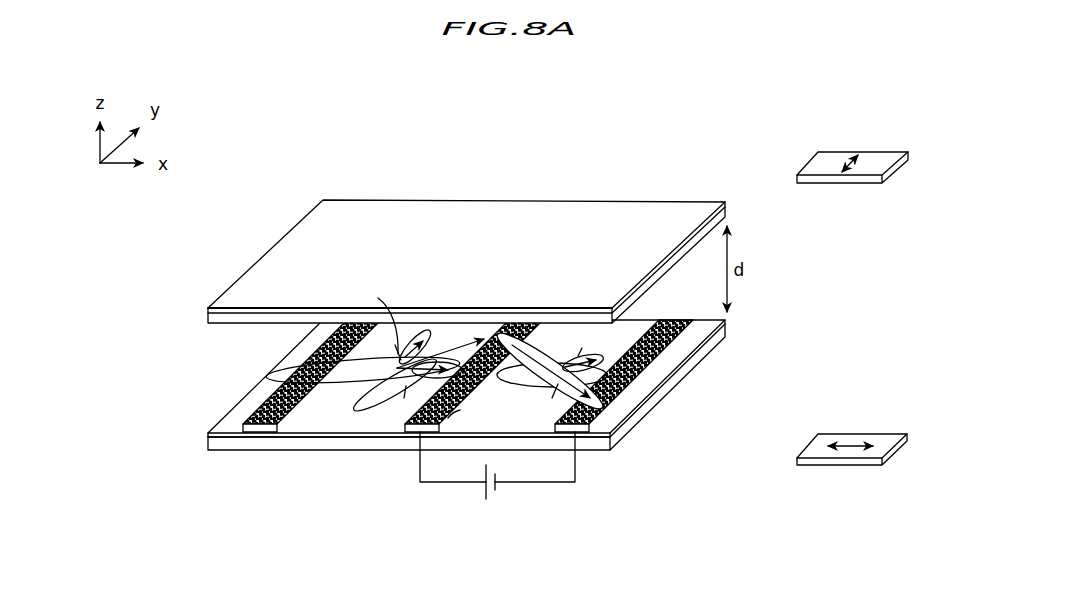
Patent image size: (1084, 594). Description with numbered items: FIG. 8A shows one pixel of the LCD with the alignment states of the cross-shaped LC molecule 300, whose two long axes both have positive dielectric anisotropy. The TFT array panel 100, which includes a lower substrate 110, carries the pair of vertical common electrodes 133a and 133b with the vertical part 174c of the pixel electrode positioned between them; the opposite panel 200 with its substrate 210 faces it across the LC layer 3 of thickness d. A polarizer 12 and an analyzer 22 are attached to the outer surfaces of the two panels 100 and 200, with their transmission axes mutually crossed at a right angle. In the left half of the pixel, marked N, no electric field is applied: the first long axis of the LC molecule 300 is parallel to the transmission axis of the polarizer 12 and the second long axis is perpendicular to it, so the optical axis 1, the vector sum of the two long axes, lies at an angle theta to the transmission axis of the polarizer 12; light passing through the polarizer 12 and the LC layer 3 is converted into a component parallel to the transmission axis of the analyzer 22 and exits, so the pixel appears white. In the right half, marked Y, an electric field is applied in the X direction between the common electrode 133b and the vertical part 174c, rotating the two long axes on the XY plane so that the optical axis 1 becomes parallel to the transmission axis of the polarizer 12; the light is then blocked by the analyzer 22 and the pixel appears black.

The optical axis 1 is at (450, 352).
The LC layer 3 is at (350, 356).
The polarizer 12 is at (845, 465).
The analyzer 22 is at (847, 183).
The TFT array panel 100 is at (494, 424).
The lower substrate 110 is at (210, 435).
The common electrode 133a is at (265, 435).
The common electrode 133b is at (624, 406).
The vertical part 174c is at (410, 432).
The panel 200 is at (493, 246).
The upper substrate 210 is at (208, 317).
The LC molecule 300 is at (290, 369).